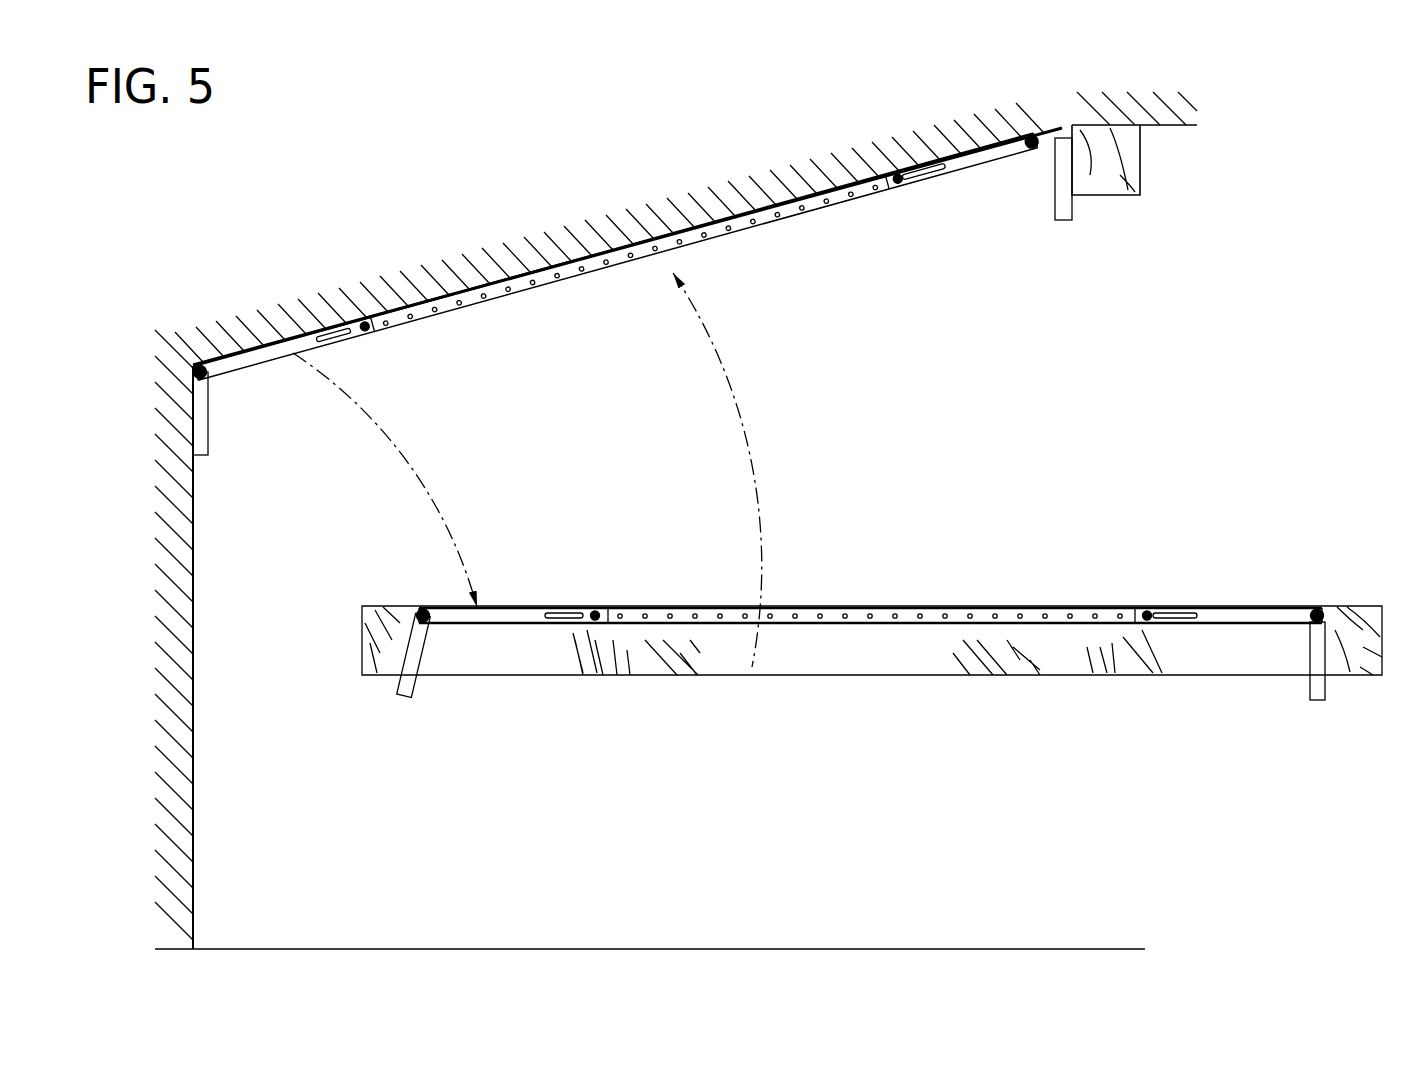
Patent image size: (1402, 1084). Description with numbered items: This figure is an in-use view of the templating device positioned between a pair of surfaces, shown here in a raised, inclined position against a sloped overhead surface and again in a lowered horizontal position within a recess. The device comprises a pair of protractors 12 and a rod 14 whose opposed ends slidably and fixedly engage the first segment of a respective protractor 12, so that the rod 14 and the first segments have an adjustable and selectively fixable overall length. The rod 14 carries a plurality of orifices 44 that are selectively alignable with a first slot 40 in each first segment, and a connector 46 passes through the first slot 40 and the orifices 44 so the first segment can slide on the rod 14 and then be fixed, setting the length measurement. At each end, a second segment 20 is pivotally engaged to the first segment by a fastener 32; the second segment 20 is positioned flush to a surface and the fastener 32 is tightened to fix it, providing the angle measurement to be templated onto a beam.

The protractor 12 is at (208, 410).
The rod 14 is at (418, 301).
The second segment 20 is at (1069, 216).
The fastener 32 is at (1060, 120).
The first slot 40 is at (919, 166).
The orifices 44 is at (648, 240).
The connector 46 is at (886, 168).